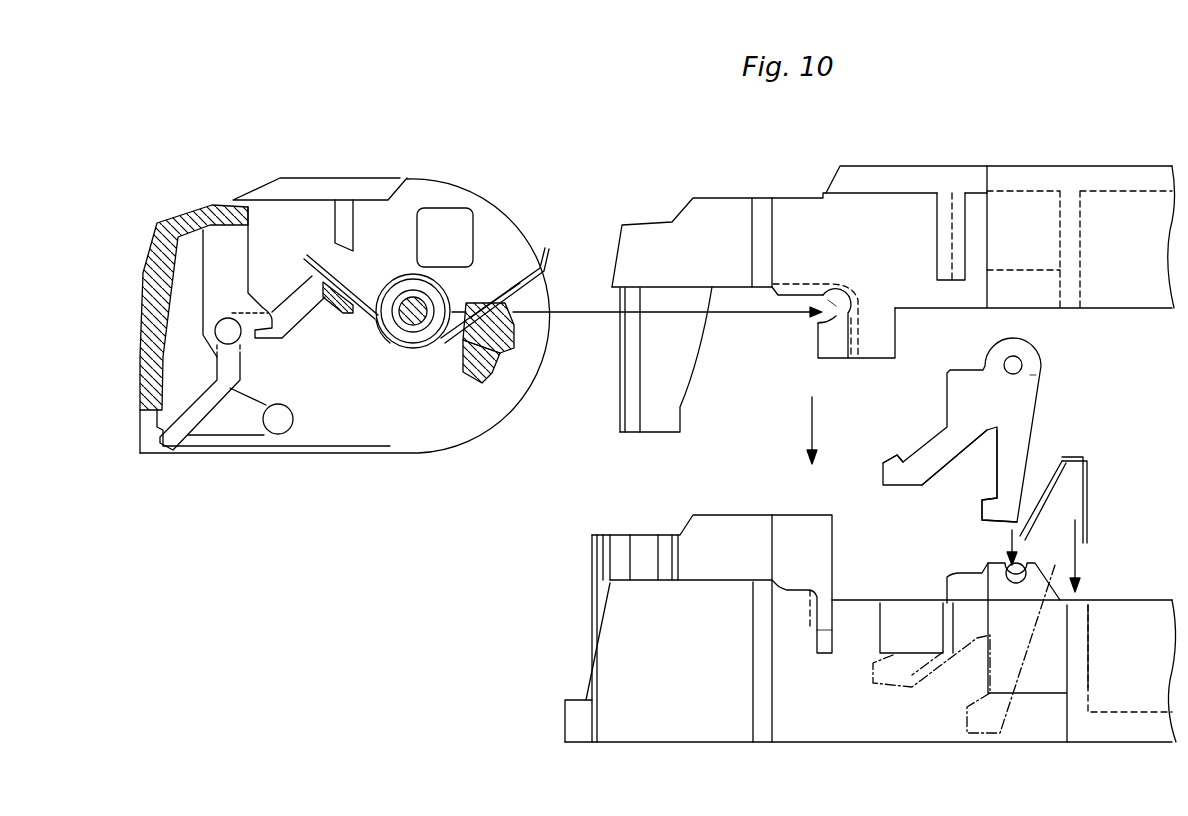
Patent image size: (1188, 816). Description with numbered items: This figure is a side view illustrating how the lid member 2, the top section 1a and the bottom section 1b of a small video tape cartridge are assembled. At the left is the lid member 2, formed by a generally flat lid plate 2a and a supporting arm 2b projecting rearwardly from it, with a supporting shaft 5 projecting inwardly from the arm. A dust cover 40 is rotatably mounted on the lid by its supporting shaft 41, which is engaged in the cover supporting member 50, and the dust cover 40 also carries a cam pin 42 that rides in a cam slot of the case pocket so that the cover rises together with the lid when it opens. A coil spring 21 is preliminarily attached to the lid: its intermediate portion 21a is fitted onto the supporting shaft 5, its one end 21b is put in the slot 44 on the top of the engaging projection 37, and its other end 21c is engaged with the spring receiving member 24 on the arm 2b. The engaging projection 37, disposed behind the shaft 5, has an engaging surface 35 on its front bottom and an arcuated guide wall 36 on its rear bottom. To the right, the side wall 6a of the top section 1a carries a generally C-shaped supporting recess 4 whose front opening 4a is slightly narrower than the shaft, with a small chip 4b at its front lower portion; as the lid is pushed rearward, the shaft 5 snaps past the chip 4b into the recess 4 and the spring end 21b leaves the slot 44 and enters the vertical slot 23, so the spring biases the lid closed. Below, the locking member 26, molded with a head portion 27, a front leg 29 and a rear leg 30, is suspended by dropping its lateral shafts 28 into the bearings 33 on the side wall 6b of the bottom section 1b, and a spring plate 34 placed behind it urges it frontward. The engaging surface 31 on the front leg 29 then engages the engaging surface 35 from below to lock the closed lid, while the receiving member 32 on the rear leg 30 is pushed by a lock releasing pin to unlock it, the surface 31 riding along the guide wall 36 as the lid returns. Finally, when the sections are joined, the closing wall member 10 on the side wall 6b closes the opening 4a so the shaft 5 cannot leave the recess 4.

The top section 1a is at (950, 166).
The bottom section 1b is at (1128, 600).
The lid member 2 is at (155, 230).
The lid plate 2a is at (150, 288).
The supporting arm 2b is at (449, 200).
The supporting recess 4 is at (852, 302).
The opening 4a is at (818, 314).
The chip 4b is at (817, 324).
The supporting shaft 5 is at (412, 326).
The side wall of the top section 6a is at (789, 210).
The side wall of the bottom section 6b is at (845, 740).
The closing wall member 10 is at (822, 598).
The coil spring 21 is at (397, 281).
The intermediate portion of the coil spring 21a is at (391, 348).
The one end of the coil spring 21b is at (548, 257).
The another end of the coil spring 21c is at (318, 250).
The vertical slot 23 is at (946, 226).
The spring receiving member 24 is at (331, 320).
The locking member 26 is at (1036, 400).
The head portion 27 is at (1040, 375).
The lateral shaft 28 is at (1022, 363).
The front leg 29 is at (933, 450).
The rear leg 30 is at (1012, 462).
The engaging surface 31 is at (897, 455).
The receiving member 32 is at (980, 510).
The bearing 33 is at (1020, 563).
The spring plate 34 is at (1088, 506).
The engaging surface 35 is at (472, 378).
The arcuated guide wall 36 is at (492, 362).
The engaging projection 37 is at (470, 345).
The dust cover 40 is at (318, 186).
The supporting shaft of the dust cover 41 is at (226, 333).
The cam pin 42 is at (290, 419).
The slot 44 is at (480, 311).
The cover supporting member 50 is at (240, 286).